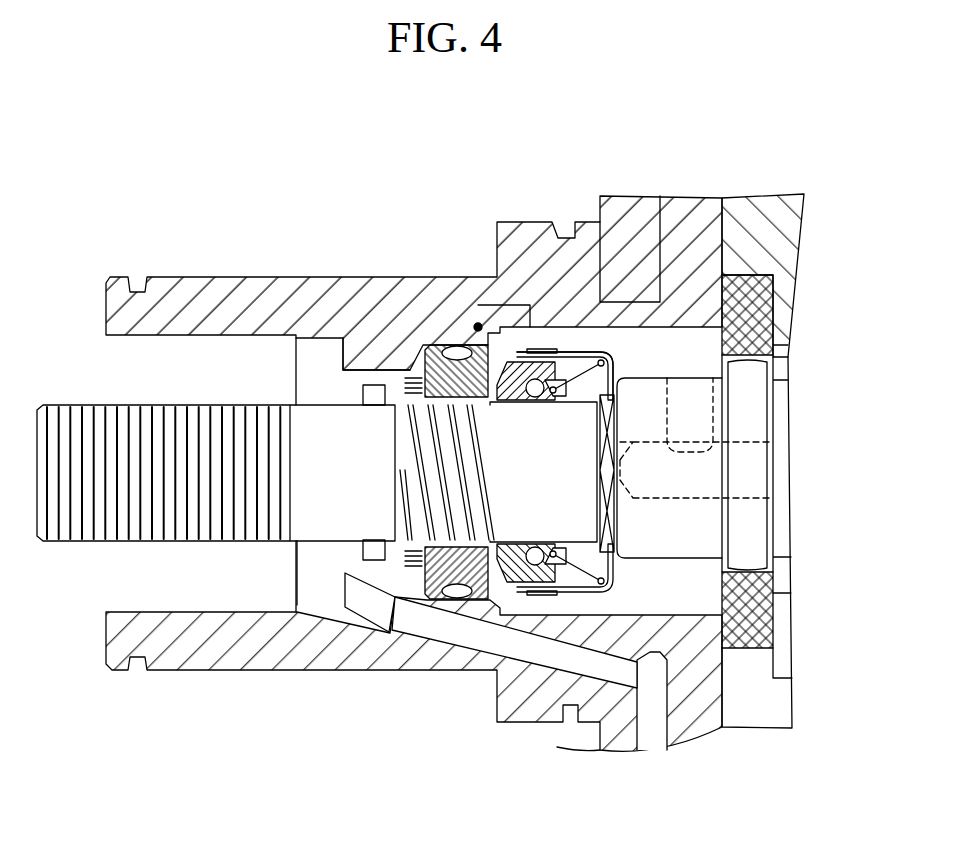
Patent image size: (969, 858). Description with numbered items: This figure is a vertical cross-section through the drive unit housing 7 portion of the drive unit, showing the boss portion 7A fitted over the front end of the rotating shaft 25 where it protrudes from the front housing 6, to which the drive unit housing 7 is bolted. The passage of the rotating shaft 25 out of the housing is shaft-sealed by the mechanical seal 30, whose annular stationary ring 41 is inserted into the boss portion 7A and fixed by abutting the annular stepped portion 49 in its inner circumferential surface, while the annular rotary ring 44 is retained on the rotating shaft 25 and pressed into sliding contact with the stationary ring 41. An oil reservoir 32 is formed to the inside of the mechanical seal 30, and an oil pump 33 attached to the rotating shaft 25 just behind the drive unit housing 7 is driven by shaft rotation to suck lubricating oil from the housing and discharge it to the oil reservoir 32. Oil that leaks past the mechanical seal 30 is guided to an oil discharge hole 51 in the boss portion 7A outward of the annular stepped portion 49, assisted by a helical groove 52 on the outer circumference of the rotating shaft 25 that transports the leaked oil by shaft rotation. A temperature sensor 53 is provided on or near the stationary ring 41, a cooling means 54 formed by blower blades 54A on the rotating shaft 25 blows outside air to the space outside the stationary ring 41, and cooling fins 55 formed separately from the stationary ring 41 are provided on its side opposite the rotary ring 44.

The front housing 6 is at (758, 223).
The drive unit housing 7 is at (693, 227).
The boss portion 7A is at (258, 277).
The rotating shaft 25 is at (310, 442).
The mechanical seal 30 is at (570, 330).
The oil reservoir 32 is at (660, 577).
The oil pump 33 is at (762, 620).
The annular stationary ring 41 is at (434, 360).
The annular rotary ring 44 is at (538, 372).
The annular stepped portion 49 is at (380, 358).
The oil discharge hole 51 is at (458, 633).
The helical groove 52 is at (463, 486).
The temperature sensor 53 is at (478, 323).
The cooling means 54 is at (357, 547).
The blower blades 54A is at (371, 540).
The cooling fins 55 is at (413, 377).